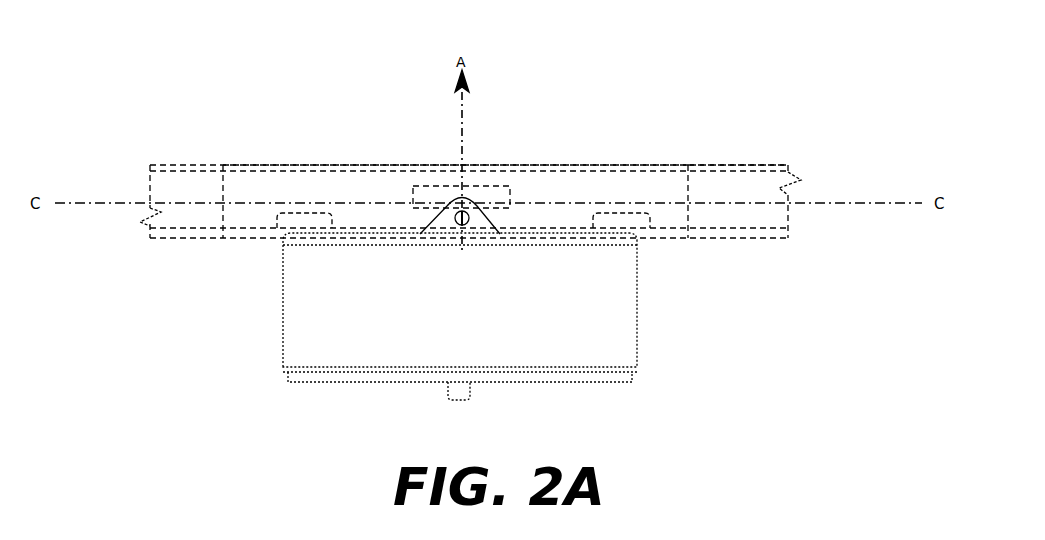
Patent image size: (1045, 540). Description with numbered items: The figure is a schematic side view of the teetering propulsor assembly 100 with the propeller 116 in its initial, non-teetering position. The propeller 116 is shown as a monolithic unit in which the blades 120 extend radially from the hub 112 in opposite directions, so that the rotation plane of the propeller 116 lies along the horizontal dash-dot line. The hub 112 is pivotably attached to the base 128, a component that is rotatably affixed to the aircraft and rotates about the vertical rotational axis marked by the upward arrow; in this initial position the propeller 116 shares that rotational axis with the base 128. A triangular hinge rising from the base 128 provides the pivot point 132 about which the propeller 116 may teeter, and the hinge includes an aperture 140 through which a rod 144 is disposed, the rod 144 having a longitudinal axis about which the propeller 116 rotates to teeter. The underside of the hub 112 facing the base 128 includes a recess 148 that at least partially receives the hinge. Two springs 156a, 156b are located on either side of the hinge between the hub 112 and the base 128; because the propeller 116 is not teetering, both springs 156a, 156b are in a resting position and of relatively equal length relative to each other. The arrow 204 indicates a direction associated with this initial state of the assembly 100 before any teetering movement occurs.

The teetering propulsor assembly 100 is at (255, 66).
The hub 112 is at (431, 162).
The propeller 116 is at (727, 194).
The blade 120 is at (182, 243).
The base 128 is at (620, 333).
The pivot point 132 is at (457, 226).
The aperture 140 is at (455, 216).
The rod 144 is at (468, 226).
The recess 148 is at (293, 212).
The spring 156a is at (354, 232).
The spring 156b is at (567, 233).
The direction of movement 204 is at (545, 203).